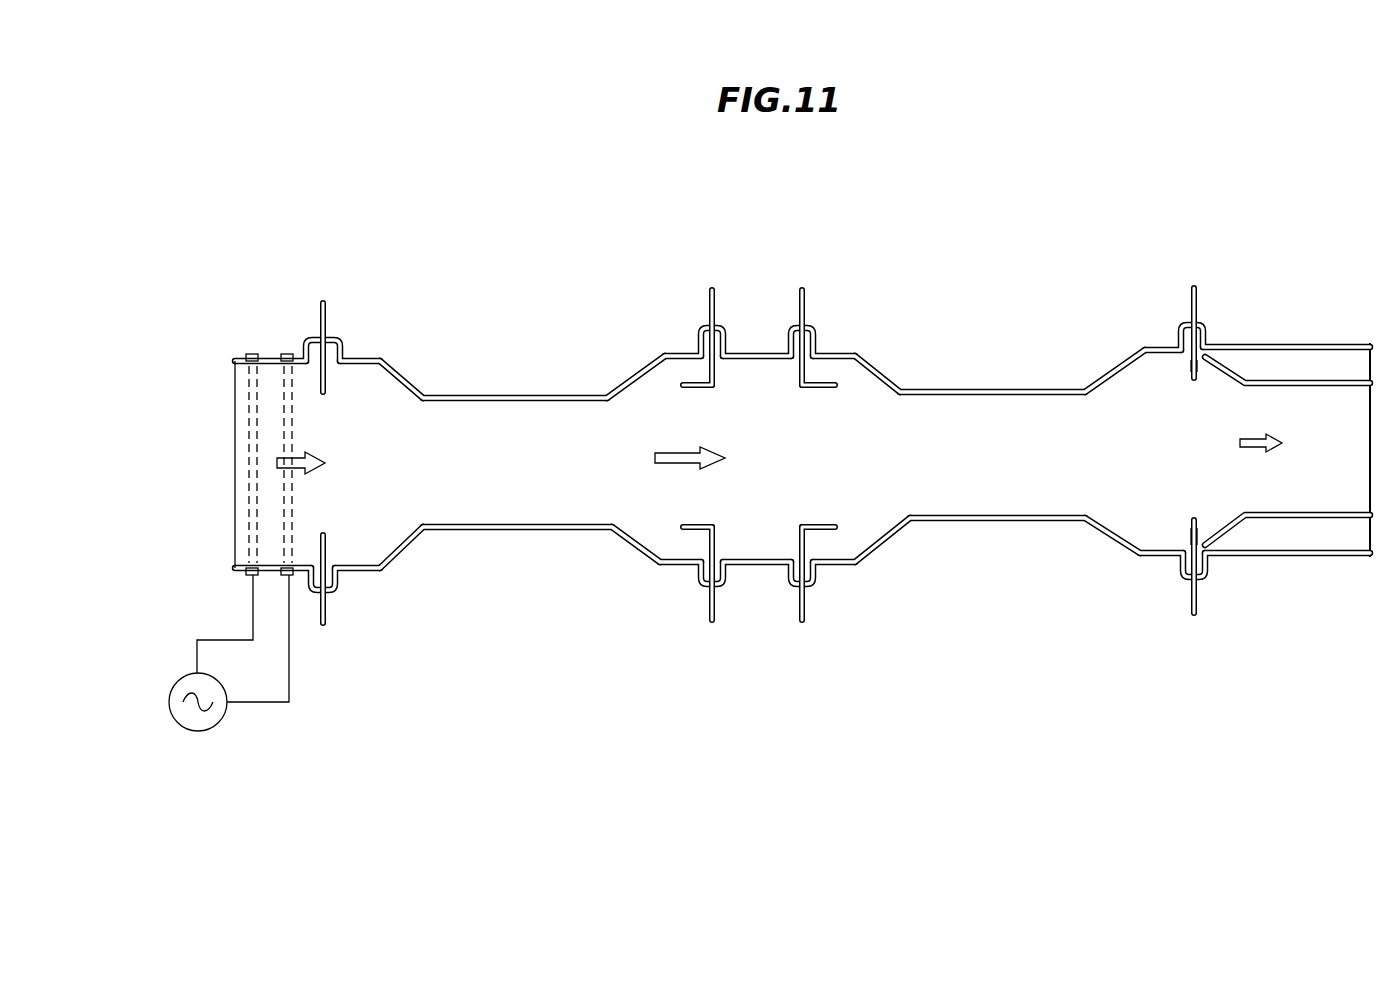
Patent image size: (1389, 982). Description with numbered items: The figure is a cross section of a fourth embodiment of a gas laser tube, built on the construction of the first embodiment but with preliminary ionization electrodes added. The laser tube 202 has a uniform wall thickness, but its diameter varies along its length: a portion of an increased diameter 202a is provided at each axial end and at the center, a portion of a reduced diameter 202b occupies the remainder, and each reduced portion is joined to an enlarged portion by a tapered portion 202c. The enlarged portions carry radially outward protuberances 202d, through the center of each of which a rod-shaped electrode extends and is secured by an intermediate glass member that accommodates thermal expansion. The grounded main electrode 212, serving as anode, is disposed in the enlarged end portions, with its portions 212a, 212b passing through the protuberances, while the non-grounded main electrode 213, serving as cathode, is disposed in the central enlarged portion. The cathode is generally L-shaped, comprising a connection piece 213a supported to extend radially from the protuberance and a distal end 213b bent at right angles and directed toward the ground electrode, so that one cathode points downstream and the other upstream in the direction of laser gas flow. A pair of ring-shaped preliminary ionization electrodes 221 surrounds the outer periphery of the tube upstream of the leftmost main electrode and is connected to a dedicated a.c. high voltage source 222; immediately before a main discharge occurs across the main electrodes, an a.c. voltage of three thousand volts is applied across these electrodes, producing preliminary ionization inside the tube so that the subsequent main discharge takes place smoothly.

The laser tube 202 is at (802, 440).
The portion of an increased diameter 202a is at (365, 360).
The portion of a reduced diameter 202b is at (555, 396).
The tapered portion 202c is at (405, 378).
The protuberance 202d is at (335, 345).
The main electrode (ground electrode, anode) 212 is at (777, 442).
The main electrode portion 212a is at (1200, 365).
The main electrode portion 212b is at (1192, 378).
The main electrode (non-grounded electrode, cathode) 213 is at (778, 391).
The connection piece 213a is at (800, 372).
The distal end 213b is at (688, 388).
The preliminary ionization electrode 221 is at (288, 354).
The a.c. high voltage source 222 is at (187, 728).